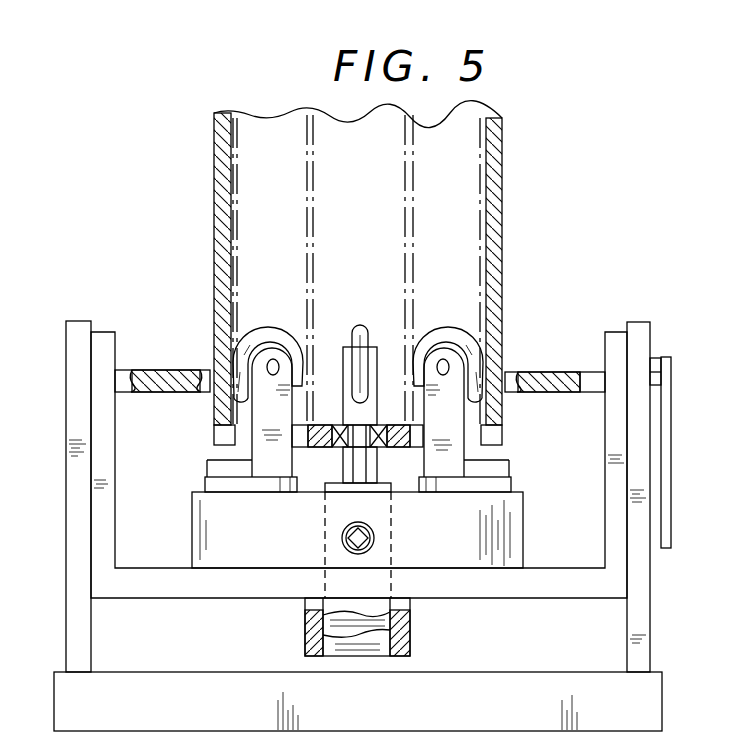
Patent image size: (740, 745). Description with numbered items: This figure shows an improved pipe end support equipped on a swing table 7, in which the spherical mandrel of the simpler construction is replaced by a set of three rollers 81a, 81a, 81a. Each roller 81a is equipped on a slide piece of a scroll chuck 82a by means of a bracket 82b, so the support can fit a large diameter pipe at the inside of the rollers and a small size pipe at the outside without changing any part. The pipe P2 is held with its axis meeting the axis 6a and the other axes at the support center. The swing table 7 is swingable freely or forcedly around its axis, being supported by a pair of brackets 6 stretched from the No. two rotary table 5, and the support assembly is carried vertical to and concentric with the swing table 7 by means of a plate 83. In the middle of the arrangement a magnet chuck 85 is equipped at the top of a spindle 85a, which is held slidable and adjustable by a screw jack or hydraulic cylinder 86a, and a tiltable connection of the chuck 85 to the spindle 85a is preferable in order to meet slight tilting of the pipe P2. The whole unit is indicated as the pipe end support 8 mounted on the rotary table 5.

The pipe P2 is at (232, 130).
The roller 81a is at (272, 321).
The pipe supporting assembly 8 is at (612, 265).
The swing table 7 is at (596, 380).
The axis 6a is at (657, 358).
The bracket 6 is at (67, 562).
The plate 83 is at (575, 581).
The magnet chuck 85 is at (490, 443).
The bracket 82b is at (222, 454).
The spindle 85a is at (371, 470).
The scroll chuck 82a is at (524, 510).
The screw jack or hydraulic cylinder 86a is at (410, 620).
The rotary table 5 is at (594, 672).